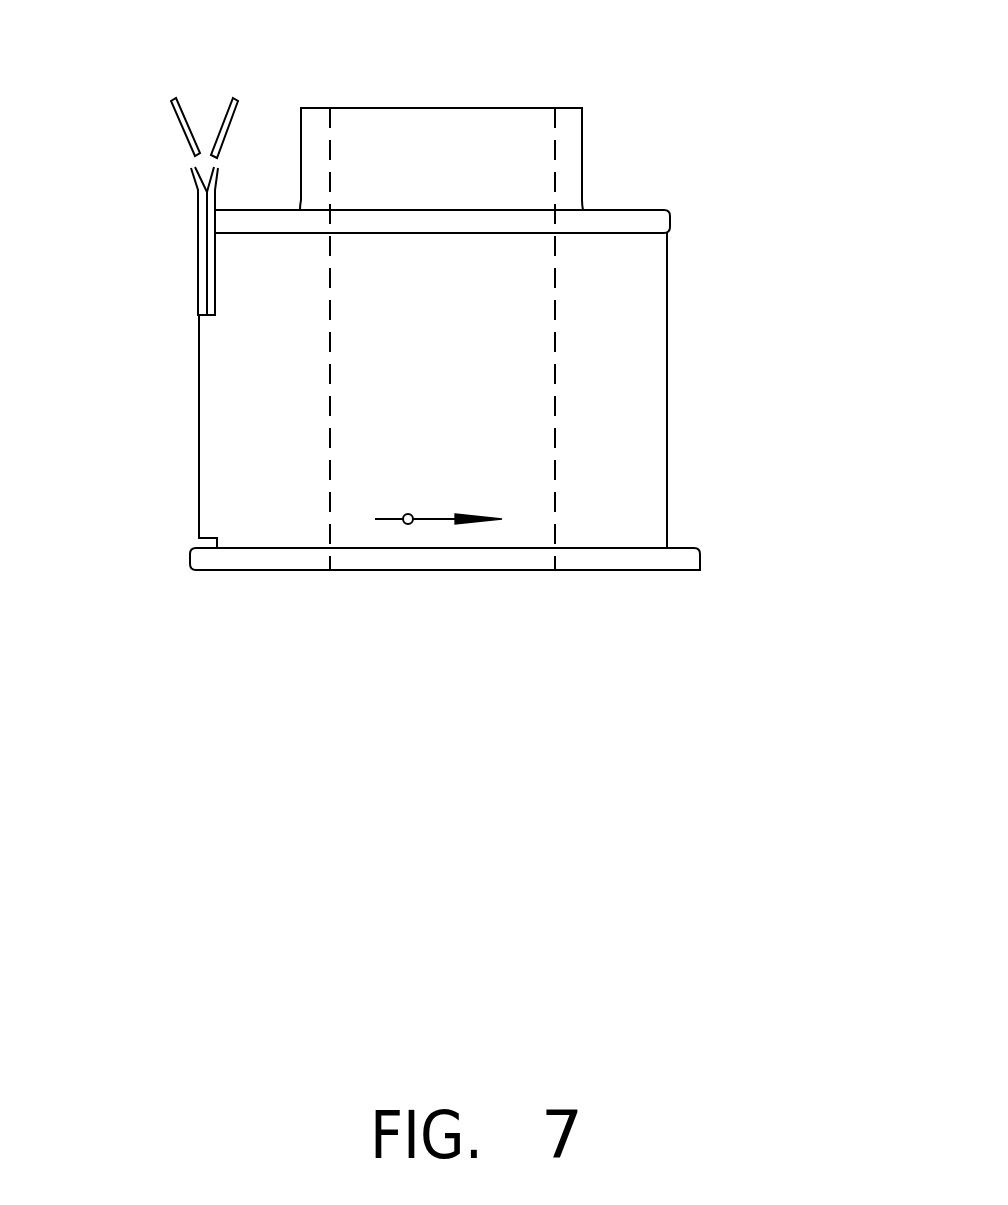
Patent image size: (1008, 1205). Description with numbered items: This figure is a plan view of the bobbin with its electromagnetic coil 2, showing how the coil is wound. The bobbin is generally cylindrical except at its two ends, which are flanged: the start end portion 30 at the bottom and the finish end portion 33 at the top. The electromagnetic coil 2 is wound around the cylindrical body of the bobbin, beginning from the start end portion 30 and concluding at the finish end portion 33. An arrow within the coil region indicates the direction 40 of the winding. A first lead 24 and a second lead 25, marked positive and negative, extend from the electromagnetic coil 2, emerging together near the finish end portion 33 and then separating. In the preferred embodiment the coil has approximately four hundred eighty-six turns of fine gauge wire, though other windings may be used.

The electromagnetic coil 2 is at (612, 423).
The first lead 24 is at (180, 133).
The second lead 25 is at (237, 117).
The start end portion 30 is at (580, 572).
The finish end portion 33 is at (630, 210).
The direction of the winding 40 is at (407, 525).